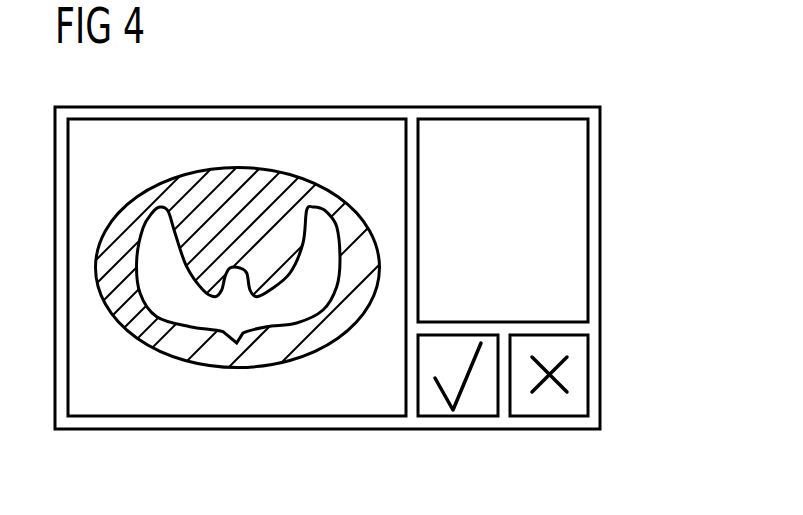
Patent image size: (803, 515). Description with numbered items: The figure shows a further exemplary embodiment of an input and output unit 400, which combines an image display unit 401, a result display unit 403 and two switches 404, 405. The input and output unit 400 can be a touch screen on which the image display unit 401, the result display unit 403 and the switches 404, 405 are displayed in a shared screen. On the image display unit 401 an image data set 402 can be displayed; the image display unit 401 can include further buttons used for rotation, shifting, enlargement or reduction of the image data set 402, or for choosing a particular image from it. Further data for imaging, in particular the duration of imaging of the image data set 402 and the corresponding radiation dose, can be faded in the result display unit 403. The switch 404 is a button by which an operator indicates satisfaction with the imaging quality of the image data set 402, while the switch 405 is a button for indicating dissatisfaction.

The input and output unit 400 is at (315, 107).
The image display unit 401 is at (233, 418).
The image data set 402 is at (137, 403).
The result display unit 403 is at (588, 224).
The switch 404 is at (452, 418).
The switch 405 is at (588, 376).